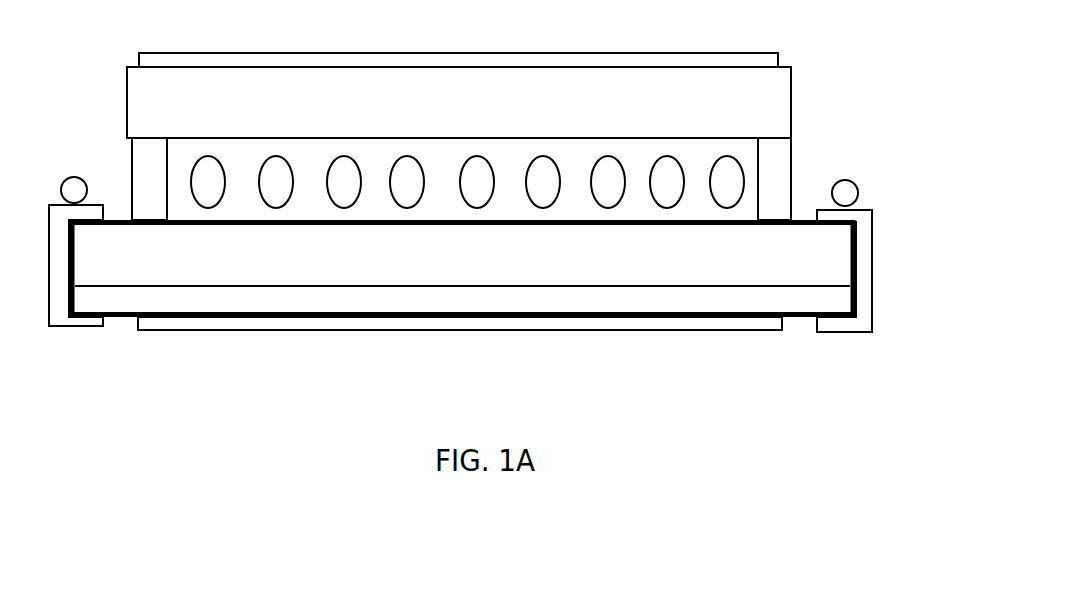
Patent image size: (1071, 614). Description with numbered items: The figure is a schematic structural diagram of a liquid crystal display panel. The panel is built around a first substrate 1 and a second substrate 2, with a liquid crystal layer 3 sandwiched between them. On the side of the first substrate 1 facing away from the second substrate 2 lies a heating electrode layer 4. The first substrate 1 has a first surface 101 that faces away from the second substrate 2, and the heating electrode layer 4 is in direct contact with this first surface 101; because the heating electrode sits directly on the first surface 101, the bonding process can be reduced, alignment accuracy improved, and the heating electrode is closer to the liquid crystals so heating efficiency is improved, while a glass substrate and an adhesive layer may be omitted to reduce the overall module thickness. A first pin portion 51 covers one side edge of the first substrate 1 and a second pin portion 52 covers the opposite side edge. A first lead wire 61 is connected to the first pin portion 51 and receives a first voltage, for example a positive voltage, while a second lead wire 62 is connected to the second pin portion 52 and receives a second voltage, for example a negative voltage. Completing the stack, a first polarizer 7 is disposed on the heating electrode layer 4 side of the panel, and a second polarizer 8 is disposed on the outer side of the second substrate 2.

The first substrate 1 is at (820, 262).
The first surface 101 is at (452, 283).
The second substrate 2 is at (769, 105).
The liquid crystal layer 3 is at (725, 178).
The heating electrode layer 4 is at (797, 303).
The first polarizer 7 is at (753, 320).
The second polarizer 8 is at (753, 59).
The first pin portion 51 is at (56, 311).
The second pin portion 52 is at (859, 323).
The first lead wire 61 is at (74, 192).
The second lead wire 62 is at (845, 192).